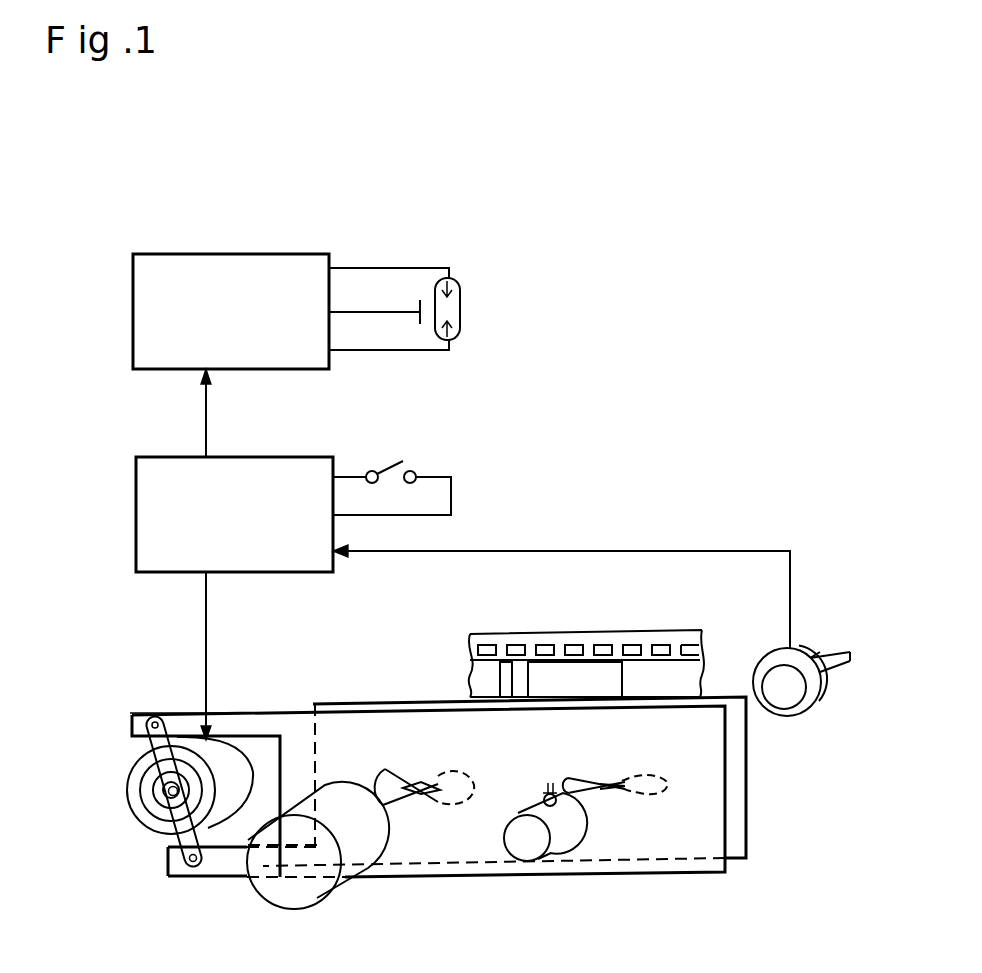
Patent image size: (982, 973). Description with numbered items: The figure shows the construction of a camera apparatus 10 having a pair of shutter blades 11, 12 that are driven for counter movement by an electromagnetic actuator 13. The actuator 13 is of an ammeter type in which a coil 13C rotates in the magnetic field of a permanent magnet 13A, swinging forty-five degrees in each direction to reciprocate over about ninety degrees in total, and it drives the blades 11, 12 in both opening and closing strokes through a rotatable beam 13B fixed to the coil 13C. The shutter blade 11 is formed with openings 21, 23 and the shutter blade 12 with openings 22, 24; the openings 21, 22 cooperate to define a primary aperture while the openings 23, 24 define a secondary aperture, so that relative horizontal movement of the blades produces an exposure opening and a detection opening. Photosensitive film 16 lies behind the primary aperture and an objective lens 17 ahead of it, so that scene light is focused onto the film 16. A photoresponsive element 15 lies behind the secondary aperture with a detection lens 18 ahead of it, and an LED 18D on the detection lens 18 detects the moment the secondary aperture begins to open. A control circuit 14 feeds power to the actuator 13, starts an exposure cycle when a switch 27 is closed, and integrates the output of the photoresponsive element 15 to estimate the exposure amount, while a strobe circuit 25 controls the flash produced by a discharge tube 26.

The camera apparatus 10 is at (642, 432).
The shutter blade 11 is at (726, 822).
The shutter blade 12 is at (747, 788).
The electromagnetic actuator 13 is at (237, 752).
The permanent magnet 13A is at (148, 834).
The rotatable beam 13B is at (177, 713).
The coil 13C is at (143, 775).
The control circuit 14 is at (283, 457).
The photoresponsive element 15 is at (803, 713).
The photosensitive film 16 is at (518, 634).
The objective lens 17 is at (350, 887).
The detection lens 18 is at (570, 848).
The LED 18D is at (541, 798).
The opening 21 is at (388, 770).
The opening 22 is at (447, 806).
The opening 23 is at (579, 776).
The opening 24 is at (656, 774).
The strobe circuit 25 is at (265, 254).
The discharge tube 26 is at (460, 300).
The switch 27 is at (392, 465).